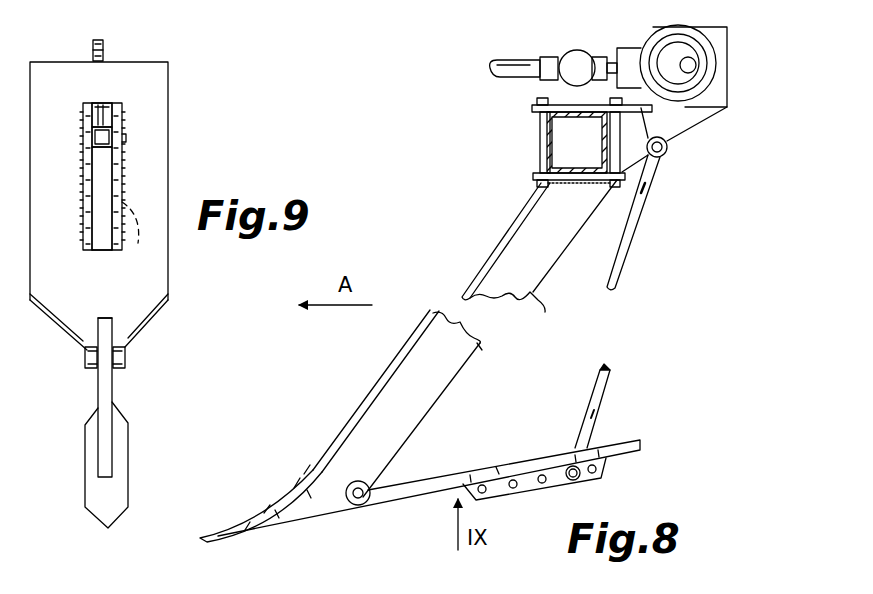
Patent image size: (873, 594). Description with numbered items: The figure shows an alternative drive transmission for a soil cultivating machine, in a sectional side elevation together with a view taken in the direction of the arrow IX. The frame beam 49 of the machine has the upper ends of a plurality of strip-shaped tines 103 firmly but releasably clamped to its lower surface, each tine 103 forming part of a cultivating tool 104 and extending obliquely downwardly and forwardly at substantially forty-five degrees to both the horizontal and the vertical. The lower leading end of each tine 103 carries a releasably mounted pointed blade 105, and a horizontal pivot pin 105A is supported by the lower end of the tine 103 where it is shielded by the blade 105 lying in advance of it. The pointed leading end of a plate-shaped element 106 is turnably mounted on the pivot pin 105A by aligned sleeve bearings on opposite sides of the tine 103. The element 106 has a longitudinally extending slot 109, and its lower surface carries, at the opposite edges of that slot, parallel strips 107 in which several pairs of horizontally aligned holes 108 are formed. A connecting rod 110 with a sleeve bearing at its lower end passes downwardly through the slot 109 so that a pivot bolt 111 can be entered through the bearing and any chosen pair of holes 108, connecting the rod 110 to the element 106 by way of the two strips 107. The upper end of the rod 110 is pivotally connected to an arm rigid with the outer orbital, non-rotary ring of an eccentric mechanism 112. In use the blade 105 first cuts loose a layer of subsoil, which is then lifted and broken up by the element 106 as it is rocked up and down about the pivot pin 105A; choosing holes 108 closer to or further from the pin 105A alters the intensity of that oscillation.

In FIG. 8, the frame beam 49 is at (545, 123).
In FIG. 9, the tine 103 is at (115, 300).
In FIG. 8, the tine 103 is at (480, 345).
In FIG. 9, the cultivating tool 104 is at (95, 389).
In FIG. 8, the cultivating tool 104 is at (508, 222).
In FIG. 9, the pointed blade 105 is at (88, 450).
In FIG. 8, the pointed blade 105 is at (262, 517).
In FIG. 9, the pivot pin 105A is at (127, 355).
In FIG. 8, the pivot pin 105A is at (360, 485).
In FIG. 9, the plate-shaped element 106 is at (162, 103).
In FIG. 8, the plate-shaped element 106 is at (440, 476).
In FIG. 9, the strips 107 is at (88, 182).
In FIG. 8, the strips 107 is at (605, 465).
In FIG. 9, the holes 108 is at (138, 238).
In FIG. 8, the holes 108 is at (542, 484).
In FIG. 9, the slot 109 is at (103, 212).
In FIG. 8, the slot 109 is at (498, 467).
In FIG. 9, the connecting rod 110 is at (107, 46).
In FIG. 8, the connecting rod 110 is at (623, 268).
In FIG. 9, the pivot bolt 111 is at (82, 137).
In FIG. 8, the pivot bolt 111 is at (573, 480).
In FIG. 8, the eccentric mechanism 112 is at (660, 35).